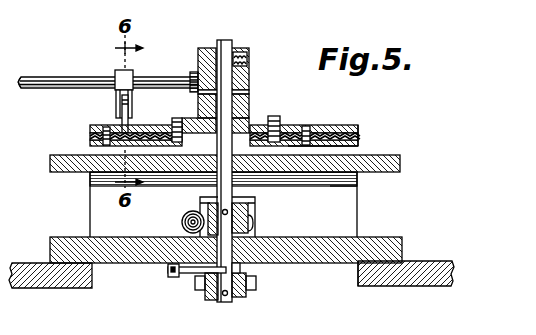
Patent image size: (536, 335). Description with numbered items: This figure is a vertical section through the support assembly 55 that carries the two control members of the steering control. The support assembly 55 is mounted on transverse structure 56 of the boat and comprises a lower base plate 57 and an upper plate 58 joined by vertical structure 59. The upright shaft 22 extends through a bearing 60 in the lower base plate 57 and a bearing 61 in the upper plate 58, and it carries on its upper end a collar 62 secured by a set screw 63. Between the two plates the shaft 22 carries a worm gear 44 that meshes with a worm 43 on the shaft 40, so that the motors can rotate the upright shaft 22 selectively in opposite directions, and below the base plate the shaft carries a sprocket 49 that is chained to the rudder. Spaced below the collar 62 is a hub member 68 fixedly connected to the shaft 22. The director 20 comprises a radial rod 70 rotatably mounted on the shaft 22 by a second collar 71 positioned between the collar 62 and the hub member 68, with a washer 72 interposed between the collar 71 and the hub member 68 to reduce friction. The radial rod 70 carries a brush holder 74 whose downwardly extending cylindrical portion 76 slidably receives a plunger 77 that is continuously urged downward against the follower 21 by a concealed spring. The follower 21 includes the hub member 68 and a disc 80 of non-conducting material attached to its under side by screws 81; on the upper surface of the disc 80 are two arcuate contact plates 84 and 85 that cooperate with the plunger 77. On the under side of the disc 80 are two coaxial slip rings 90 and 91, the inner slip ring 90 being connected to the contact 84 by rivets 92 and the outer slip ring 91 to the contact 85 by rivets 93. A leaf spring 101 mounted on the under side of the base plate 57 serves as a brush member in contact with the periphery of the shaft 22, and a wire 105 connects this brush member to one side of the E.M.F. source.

The director 20 is at (33, 70).
The follower 21 is at (359, 128).
The upright shaft 22 is at (218, 42).
The shaft 40 is at (181, 222).
The worm 43 is at (190, 216).
The worm gear 44 is at (254, 222).
The sprocket 49 is at (248, 290).
The support assembly 55 is at (132, 269).
The transverse structure 56 is at (60, 289).
The lower base plate 57 is at (353, 264).
The upper plate 58 is at (399, 155).
The vertical structure 59 is at (358, 207).
The bearing 60 is at (236, 268).
The bearing 61 is at (238, 193).
The collar 62 is at (241, 52).
The set screw 63 is at (248, 62).
The hub member 68 is at (250, 105).
The radial rod 70 is at (74, 77).
The second collar 71 is at (250, 80).
The washer 72 is at (250, 92).
The brush holder 74 is at (134, 71).
The cylindrical portion 76 is at (117, 100).
The plunger 77 is at (130, 124).
The disc 80 is at (359, 138).
The screws 81 is at (177, 118).
The contact 84 is at (340, 125).
The contact 85 is at (92, 134).
The inner slip ring 90 is at (322, 178).
The outer slip ring 91 is at (343, 180).
The rivets 92 is at (306, 126).
The rivets 93 is at (105, 127).
The leaf spring 101 is at (184, 274).
The wire 105 is at (172, 277).